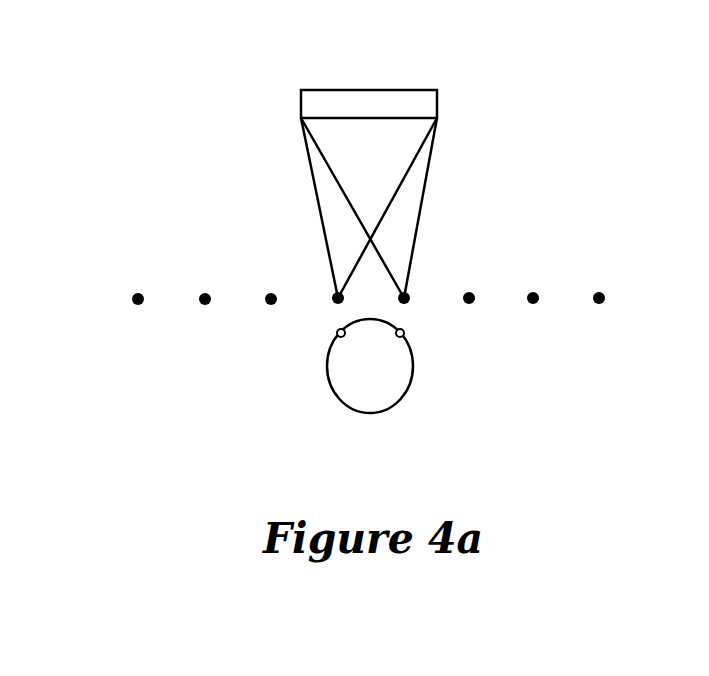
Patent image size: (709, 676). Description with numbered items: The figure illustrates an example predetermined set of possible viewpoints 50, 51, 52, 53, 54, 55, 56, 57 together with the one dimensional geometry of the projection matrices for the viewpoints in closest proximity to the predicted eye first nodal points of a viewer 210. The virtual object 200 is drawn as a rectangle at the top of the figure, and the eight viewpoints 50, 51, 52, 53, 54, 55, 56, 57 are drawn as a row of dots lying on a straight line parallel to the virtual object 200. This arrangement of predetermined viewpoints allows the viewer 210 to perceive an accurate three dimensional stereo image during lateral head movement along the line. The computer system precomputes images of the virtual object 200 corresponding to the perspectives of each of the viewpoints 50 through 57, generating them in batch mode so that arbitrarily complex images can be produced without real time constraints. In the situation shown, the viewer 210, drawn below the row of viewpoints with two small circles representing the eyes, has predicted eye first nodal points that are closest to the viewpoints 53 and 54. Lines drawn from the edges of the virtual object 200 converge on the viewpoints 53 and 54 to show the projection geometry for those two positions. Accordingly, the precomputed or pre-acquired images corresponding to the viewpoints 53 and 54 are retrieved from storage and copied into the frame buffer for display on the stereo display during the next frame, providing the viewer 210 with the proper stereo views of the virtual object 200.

The virtual object 200 is at (413, 82).
The viewer 210 is at (417, 397).
The viewpoint 50 is at (135, 288).
The viewpoint 51 is at (202, 288).
The viewpoint 52 is at (268, 288).
The viewpoint 53 is at (327, 305).
The viewpoint 54 is at (413, 305).
The viewpoint 55 is at (478, 288).
The viewpoint 56 is at (543, 288).
The viewpoint 57 is at (610, 288).